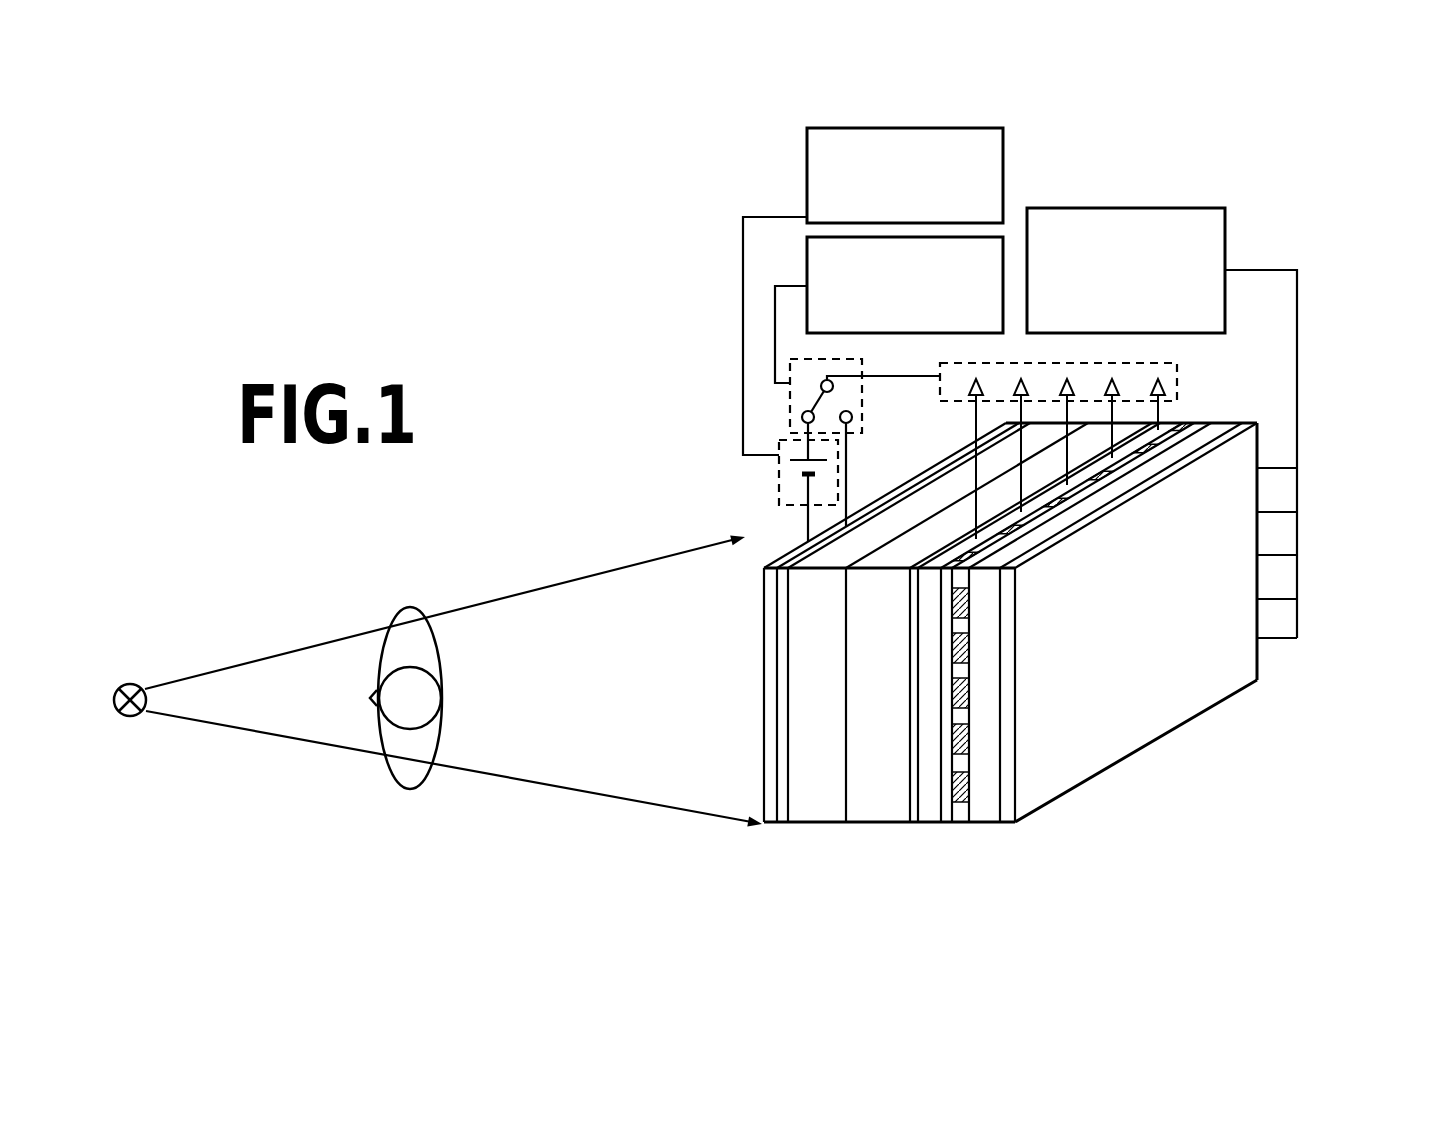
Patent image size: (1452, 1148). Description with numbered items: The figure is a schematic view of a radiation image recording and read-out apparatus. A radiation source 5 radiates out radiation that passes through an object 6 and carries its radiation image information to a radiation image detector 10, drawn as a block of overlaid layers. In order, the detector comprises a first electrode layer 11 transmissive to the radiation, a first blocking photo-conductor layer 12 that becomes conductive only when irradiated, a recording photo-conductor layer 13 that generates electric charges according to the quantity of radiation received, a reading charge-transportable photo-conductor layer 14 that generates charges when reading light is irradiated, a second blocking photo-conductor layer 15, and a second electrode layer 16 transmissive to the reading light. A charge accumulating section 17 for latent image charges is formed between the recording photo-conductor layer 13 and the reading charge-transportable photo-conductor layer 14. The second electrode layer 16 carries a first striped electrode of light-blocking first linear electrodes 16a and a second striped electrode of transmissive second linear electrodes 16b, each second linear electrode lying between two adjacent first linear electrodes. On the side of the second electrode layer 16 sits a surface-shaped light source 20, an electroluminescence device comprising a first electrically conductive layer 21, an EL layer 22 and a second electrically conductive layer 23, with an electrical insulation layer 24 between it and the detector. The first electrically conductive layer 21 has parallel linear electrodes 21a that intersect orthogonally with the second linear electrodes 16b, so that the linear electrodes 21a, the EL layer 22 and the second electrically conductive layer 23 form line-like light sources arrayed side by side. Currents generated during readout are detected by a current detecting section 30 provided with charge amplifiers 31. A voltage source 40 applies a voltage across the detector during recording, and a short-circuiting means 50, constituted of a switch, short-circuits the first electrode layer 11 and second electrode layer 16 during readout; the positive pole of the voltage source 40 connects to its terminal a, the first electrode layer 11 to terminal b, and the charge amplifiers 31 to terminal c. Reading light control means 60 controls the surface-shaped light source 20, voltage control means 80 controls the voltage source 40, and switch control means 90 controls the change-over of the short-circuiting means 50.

The radiation source 5 is at (131, 684).
The object 6 is at (408, 608).
The radiation image detector 10 is at (718, 905).
The first electrode layer 11 is at (772, 822).
The first blocking photo-conductor layer 12 is at (782, 822).
The recording photo-conductor layer 13 is at (835, 822).
The reading charge-transportable photo-conductor layer 14 is at (868, 822).
The second blocking photo-conductor layer 15 is at (912, 822).
The second electrode layer 16 is at (930, 822).
The first linear electrodes 16a is at (1143, 453).
The second linear electrodes 16b is at (1180, 432).
The charge accumulating section 17 is at (838, 777).
The surface-shaped light source 20 is at (1110, 815).
The first electrically conductive layer 21 is at (1081, 677).
The linear electrodes 21a is at (958, 822).
The EL layer 22 is at (973, 822).
The second electrically conductive layer 23 is at (1010, 795).
The electrical insulation layer 24 is at (947, 822).
The current detecting section 30 is at (1180, 372).
The charge amplifiers 31 is at (1160, 383).
The voltage source 40 is at (779, 495).
The short-circuiting means 50 is at (862, 368).
The reading light control means 60 is at (1225, 232).
The voltage control means 80 is at (963, 130).
The switch control means 90 is at (807, 276).